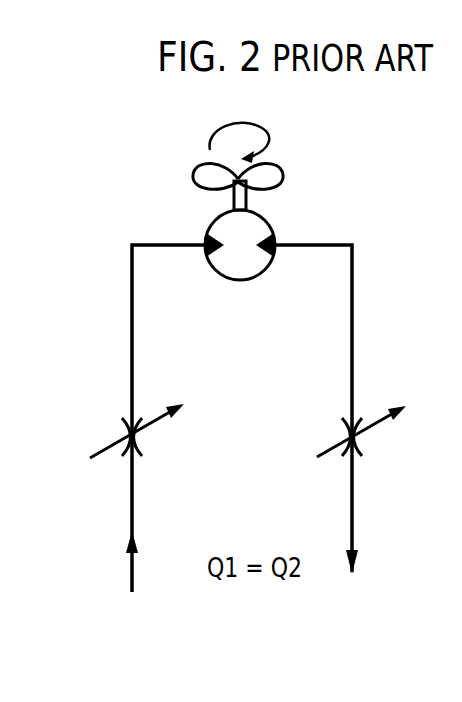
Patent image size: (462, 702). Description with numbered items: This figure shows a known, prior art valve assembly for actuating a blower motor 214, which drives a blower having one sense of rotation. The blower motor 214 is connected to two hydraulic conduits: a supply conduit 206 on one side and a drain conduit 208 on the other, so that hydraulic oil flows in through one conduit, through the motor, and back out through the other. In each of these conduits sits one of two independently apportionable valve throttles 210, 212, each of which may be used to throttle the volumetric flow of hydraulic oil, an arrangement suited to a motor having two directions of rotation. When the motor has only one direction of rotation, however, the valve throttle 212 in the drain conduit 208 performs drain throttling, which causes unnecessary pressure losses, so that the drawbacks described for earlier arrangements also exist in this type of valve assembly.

The first hydraulic line 206 is at (128, 318).
The drain conduit 208 is at (355, 303).
The valve throttle 210 is at (125, 452).
The valve throttle 212 is at (363, 418).
The blower motor 214 is at (277, 163).